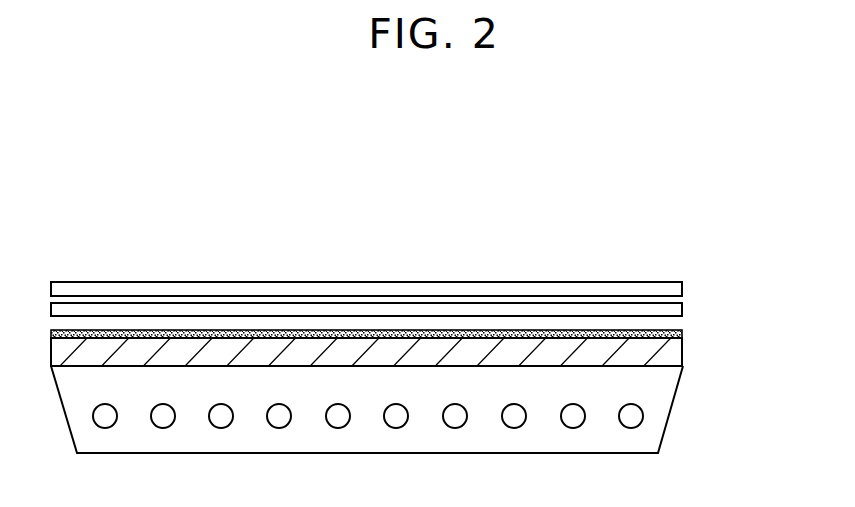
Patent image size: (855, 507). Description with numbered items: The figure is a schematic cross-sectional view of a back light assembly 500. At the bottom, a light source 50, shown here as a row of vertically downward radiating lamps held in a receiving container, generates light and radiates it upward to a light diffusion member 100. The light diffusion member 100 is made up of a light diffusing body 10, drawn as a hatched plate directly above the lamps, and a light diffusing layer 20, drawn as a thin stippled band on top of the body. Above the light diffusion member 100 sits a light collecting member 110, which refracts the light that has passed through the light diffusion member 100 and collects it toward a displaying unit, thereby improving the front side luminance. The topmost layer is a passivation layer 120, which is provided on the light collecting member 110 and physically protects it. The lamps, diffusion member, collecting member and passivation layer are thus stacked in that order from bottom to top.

The back light assembly 500 is at (395, 176).
The passivation layer 120 is at (682, 288).
The light collecting member 110 is at (682, 308).
The light diffusion member 100 is at (412, 343).
The light diffusing layer 20 is at (682, 332).
The light diffusing body 10 is at (682, 357).
The light source 50 is at (643, 412).